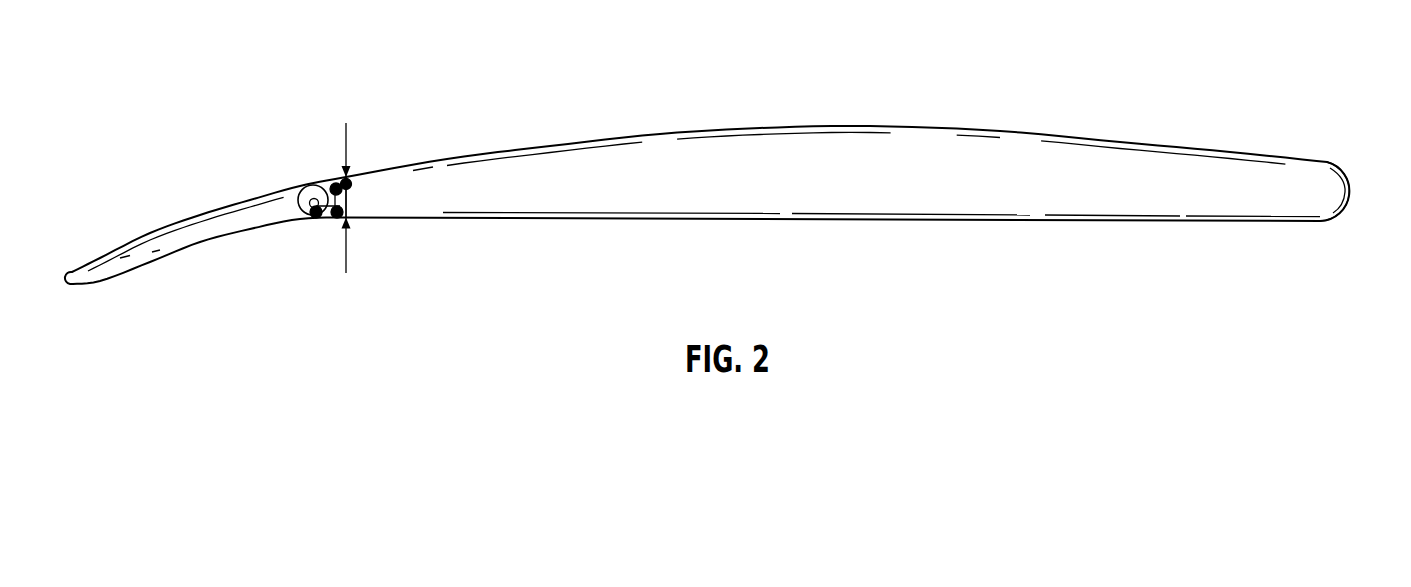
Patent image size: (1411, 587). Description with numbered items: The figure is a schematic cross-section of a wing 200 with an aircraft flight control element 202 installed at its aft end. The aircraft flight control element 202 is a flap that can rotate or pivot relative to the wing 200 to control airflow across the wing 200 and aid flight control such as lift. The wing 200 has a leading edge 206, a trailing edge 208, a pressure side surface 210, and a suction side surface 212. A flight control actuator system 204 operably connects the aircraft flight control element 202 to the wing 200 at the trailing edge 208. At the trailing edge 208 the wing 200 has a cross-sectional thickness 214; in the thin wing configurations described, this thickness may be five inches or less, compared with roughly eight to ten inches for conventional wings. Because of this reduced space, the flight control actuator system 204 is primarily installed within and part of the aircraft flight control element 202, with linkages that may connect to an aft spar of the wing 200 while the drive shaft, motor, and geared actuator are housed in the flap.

The wing 200 is at (1037, 221).
The aircraft flight control element 202 is at (168, 257).
The flight control actuator system 204 is at (313, 196).
The leading edge 206 is at (1347, 166).
The trailing edge 208 is at (348, 112).
The pressure side surface 210 is at (745, 221).
The suction side surface 212 is at (727, 130).
The cross-sectional thickness 214 is at (348, 243).